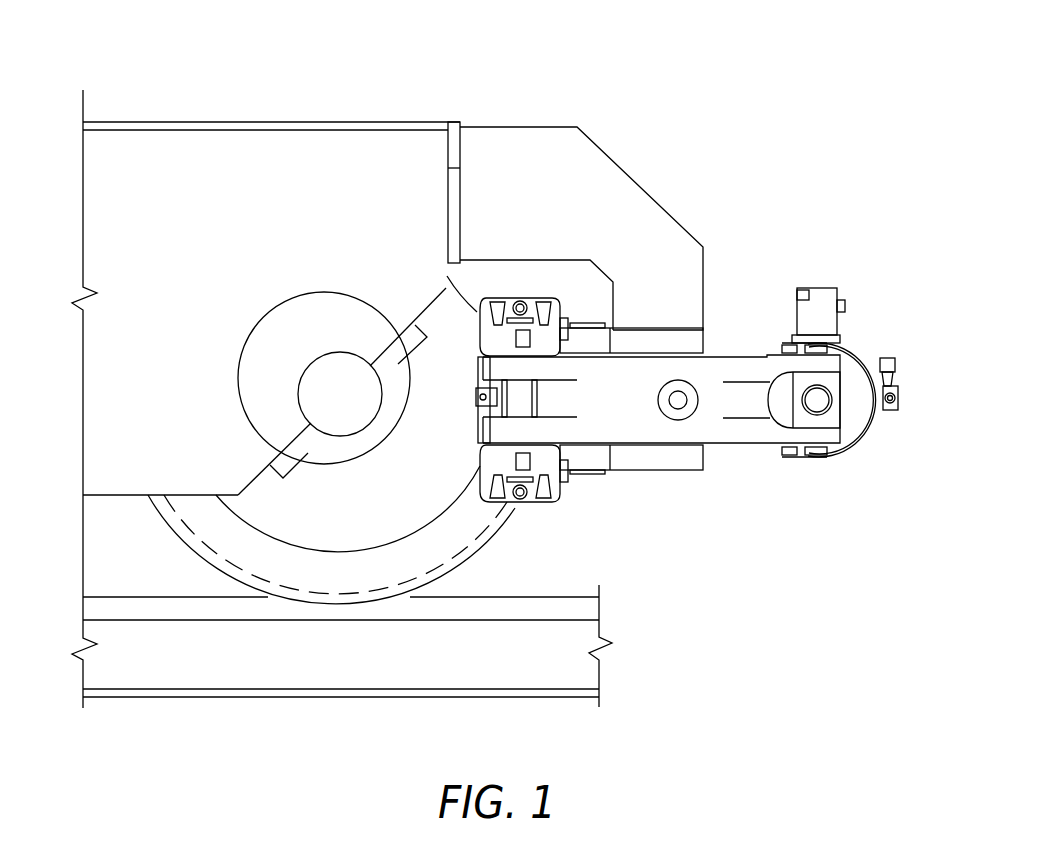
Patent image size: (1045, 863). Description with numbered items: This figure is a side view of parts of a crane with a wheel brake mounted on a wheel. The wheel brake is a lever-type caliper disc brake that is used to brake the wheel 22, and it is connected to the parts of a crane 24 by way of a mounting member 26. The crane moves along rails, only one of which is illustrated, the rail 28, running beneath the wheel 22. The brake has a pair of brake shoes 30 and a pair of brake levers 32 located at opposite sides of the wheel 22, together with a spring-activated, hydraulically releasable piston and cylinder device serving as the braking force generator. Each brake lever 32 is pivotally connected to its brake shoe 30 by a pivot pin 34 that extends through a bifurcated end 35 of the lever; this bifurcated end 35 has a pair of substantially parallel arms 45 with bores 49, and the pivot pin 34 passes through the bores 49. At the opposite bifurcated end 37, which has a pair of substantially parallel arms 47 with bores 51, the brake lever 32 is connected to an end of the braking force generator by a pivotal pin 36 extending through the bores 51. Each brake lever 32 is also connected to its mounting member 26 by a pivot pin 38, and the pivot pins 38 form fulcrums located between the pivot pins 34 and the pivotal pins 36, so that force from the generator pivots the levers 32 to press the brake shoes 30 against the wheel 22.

The wheel 22 is at (180, 548).
The parts of a crane 24 is at (203, 116).
The mounting member 26 is at (612, 160).
The rail 28 is at (237, 699).
The brake shoe 30 is at (555, 500).
The brake lever 32 is at (728, 445).
The pivot pin 34 is at (545, 398).
The bifurcated end 35 is at (565, 495).
The pivotal pin 36 is at (833, 343).
The bifurcated end 37 is at (773, 437).
The pivot pin 38 is at (612, 322).
The arms 45 is at (483, 350).
The arms 47 is at (842, 365).
The bores 49 is at (547, 297).
The bores 51 is at (792, 338).